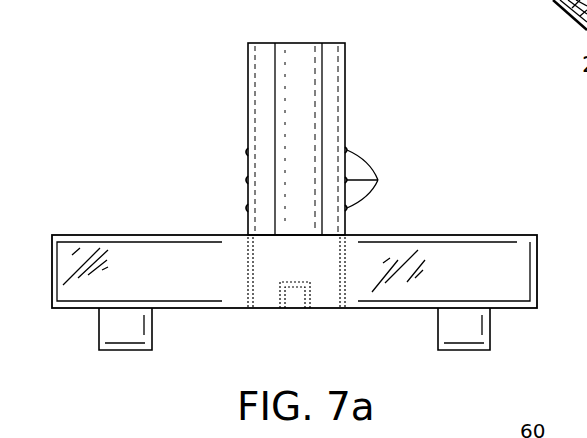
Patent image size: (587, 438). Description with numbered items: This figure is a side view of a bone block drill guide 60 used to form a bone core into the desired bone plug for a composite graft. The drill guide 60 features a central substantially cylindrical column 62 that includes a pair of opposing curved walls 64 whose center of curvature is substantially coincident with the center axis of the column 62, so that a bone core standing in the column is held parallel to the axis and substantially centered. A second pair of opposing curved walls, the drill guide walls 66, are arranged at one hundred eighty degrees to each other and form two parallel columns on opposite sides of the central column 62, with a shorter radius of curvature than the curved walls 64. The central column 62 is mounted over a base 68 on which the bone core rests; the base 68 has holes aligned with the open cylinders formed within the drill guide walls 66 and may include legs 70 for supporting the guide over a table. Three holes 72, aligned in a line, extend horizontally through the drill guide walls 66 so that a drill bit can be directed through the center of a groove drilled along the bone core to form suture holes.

The bone block drill guide 60 is at (316, 184).
The central column 62 is at (297, 43).
The opposing curved walls 64 is at (282, 60).
The drill guide walls 66 is at (342, 76).
The base 68 is at (535, 268).
The legs 70 is at (140, 337).
The holes 72 is at (378, 180).